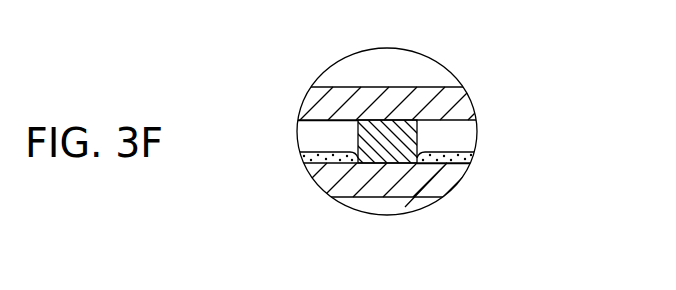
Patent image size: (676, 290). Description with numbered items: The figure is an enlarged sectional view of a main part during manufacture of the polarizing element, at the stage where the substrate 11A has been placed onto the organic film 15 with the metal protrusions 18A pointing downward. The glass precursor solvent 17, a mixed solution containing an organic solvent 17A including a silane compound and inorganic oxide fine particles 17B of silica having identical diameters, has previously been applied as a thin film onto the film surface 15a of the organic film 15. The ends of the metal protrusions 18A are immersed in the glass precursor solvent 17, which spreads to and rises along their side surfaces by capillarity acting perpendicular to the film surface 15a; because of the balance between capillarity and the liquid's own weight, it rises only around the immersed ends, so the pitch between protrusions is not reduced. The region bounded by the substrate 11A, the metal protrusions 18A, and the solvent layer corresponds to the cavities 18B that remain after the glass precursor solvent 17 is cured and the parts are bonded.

The substrate 11A is at (412, 96).
The cavities 18B is at (333, 128).
The metal protrusions 18A is at (384, 150).
The film surface 15a is at (313, 162).
The organic film 15 is at (334, 183).
The organic solvent 17A is at (470, 156).
The inorganic oxide fine particles 17B is at (448, 163).
The glass precursor solvent 17 is at (579, 139).